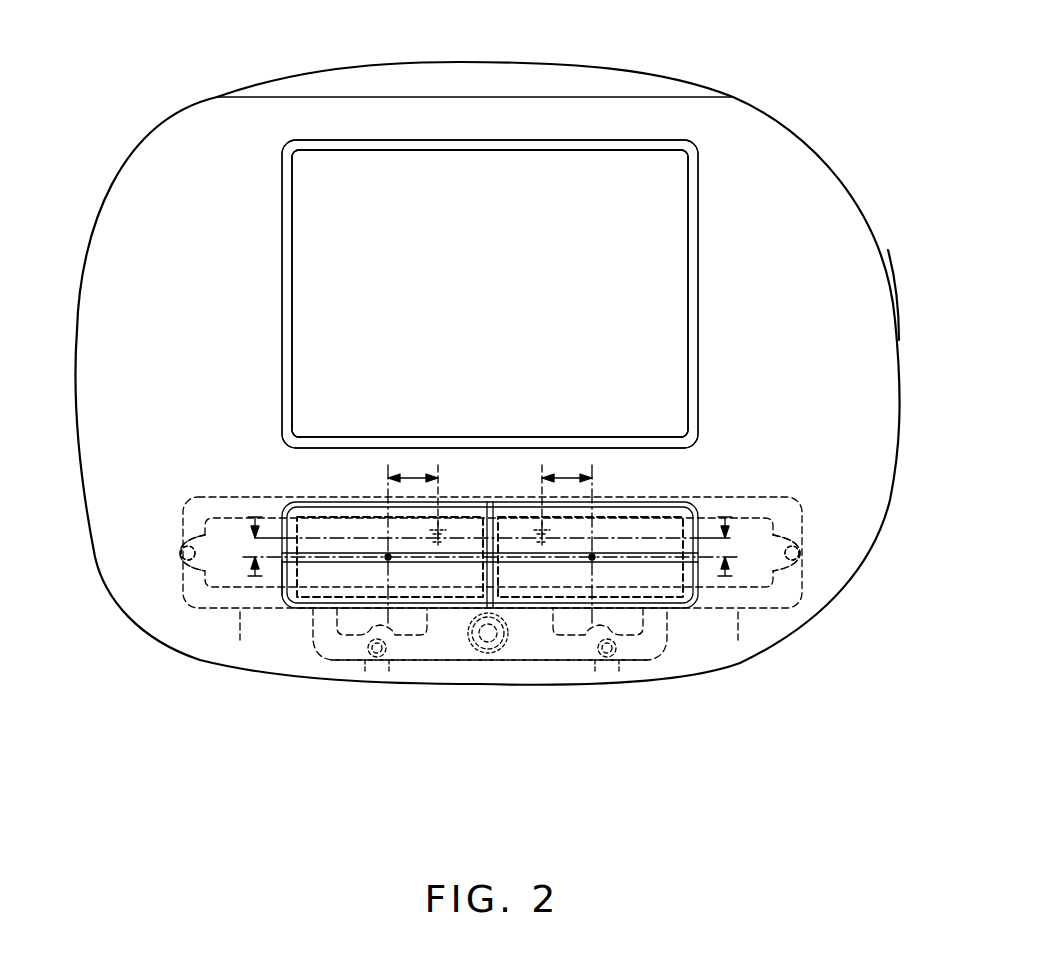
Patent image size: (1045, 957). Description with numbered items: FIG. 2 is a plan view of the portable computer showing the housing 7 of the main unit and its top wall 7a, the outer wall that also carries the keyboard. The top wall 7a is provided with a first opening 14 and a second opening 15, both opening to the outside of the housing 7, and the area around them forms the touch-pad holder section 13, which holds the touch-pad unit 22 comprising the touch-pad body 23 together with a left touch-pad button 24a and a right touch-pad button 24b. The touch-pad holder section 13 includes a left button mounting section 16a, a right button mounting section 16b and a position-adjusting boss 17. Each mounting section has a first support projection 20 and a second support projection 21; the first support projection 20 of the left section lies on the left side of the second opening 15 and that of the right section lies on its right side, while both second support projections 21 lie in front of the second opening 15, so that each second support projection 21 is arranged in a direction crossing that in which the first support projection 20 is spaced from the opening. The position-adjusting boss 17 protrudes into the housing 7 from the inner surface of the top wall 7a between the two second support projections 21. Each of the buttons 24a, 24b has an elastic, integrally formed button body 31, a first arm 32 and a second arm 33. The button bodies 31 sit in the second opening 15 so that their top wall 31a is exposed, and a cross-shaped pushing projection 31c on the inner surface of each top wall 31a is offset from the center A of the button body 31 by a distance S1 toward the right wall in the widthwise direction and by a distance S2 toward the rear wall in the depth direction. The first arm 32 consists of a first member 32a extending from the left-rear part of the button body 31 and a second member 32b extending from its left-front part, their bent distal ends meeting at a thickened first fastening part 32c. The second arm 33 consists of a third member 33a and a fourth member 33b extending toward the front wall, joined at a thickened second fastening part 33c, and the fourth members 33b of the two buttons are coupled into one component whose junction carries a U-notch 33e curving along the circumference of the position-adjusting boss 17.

The housing 7 is at (785, 176).
The top wall 7a is at (865, 292).
The touch-pad holder section 13 is at (700, 160).
The first opening 14 is at (290, 302).
The second opening 15 is at (297, 610).
The left button mounting section 16a is at (178, 572).
The right button mounting section 16b is at (798, 572).
The position-adjusting boss 17 is at (485, 655).
The first support projection 20 is at (183, 546).
The second support projection 21 is at (393, 662).
The touch-pad unit 22 is at (568, 176).
The touch-pad body 23 is at (440, 178).
The left touch-pad button 24a is at (345, 518).
The right touch-pad button 24b is at (635, 518).
The button body 31 is at (322, 525).
The top wall 31a is at (445, 585).
The pushing projection 31c is at (510, 520).
The first arm 32 is at (214, 628).
The first member 32a is at (270, 495).
The second member 32b is at (240, 612).
The first fastening part 32c is at (181, 553).
The second arm 33 is at (343, 662).
The third member 33a is at (328, 668).
The fourth member 33b is at (398, 662).
The second fastening part 33c is at (370, 657).
The U-notch 33e is at (505, 662).
The distance s1 S1 is at (412, 475).
The distance s2 S2 is at (252, 545).
The center of the button body A is at (388, 557).